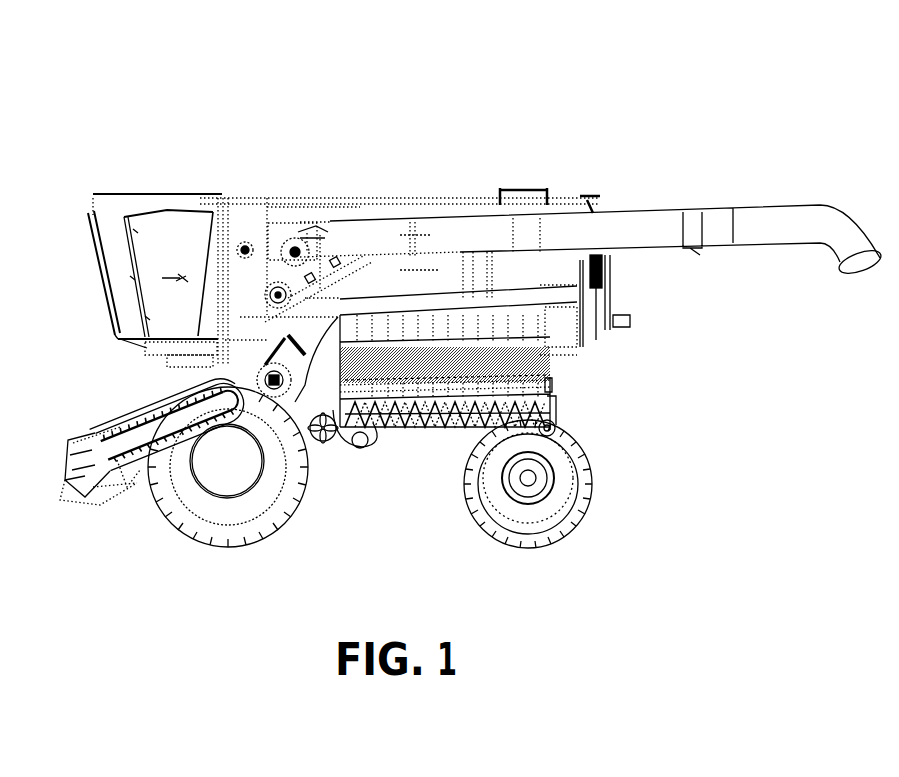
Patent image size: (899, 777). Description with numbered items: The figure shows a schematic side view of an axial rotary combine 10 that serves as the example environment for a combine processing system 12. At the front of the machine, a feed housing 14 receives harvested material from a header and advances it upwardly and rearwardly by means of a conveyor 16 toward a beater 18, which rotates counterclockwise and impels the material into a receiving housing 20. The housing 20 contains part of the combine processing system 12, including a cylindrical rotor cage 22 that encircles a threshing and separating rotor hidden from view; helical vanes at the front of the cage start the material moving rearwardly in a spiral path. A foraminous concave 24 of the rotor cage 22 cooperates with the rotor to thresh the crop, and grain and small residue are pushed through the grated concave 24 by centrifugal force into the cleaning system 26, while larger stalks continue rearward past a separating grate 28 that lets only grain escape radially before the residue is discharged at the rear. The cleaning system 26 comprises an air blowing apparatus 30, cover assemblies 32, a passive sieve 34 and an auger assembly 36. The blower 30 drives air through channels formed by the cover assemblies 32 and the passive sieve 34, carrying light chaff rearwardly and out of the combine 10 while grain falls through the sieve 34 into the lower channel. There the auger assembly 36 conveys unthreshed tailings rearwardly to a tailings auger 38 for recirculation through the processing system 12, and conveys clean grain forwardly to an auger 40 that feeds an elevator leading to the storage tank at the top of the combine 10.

The combine 10 is at (688, 95).
The combine processing system 12 is at (653, 333).
The feed housing 14 is at (100, 428).
The conveyor 16 is at (157, 420).
The beater 18 is at (257, 373).
The receiving housing 20 is at (302, 330).
The rotor cage 22 is at (412, 345).
The foraminous concave 24 is at (417, 380).
The cleaning system 26 is at (573, 383).
The separating grate 28 is at (452, 380).
The air blowing apparatus 30 is at (323, 442).
The cover assemblies 32 is at (548, 400).
The passive sieve 34 is at (552, 385).
The auger assembly 36 is at (385, 415).
The tailings auger 38 is at (552, 434).
The auger 40 is at (358, 448).